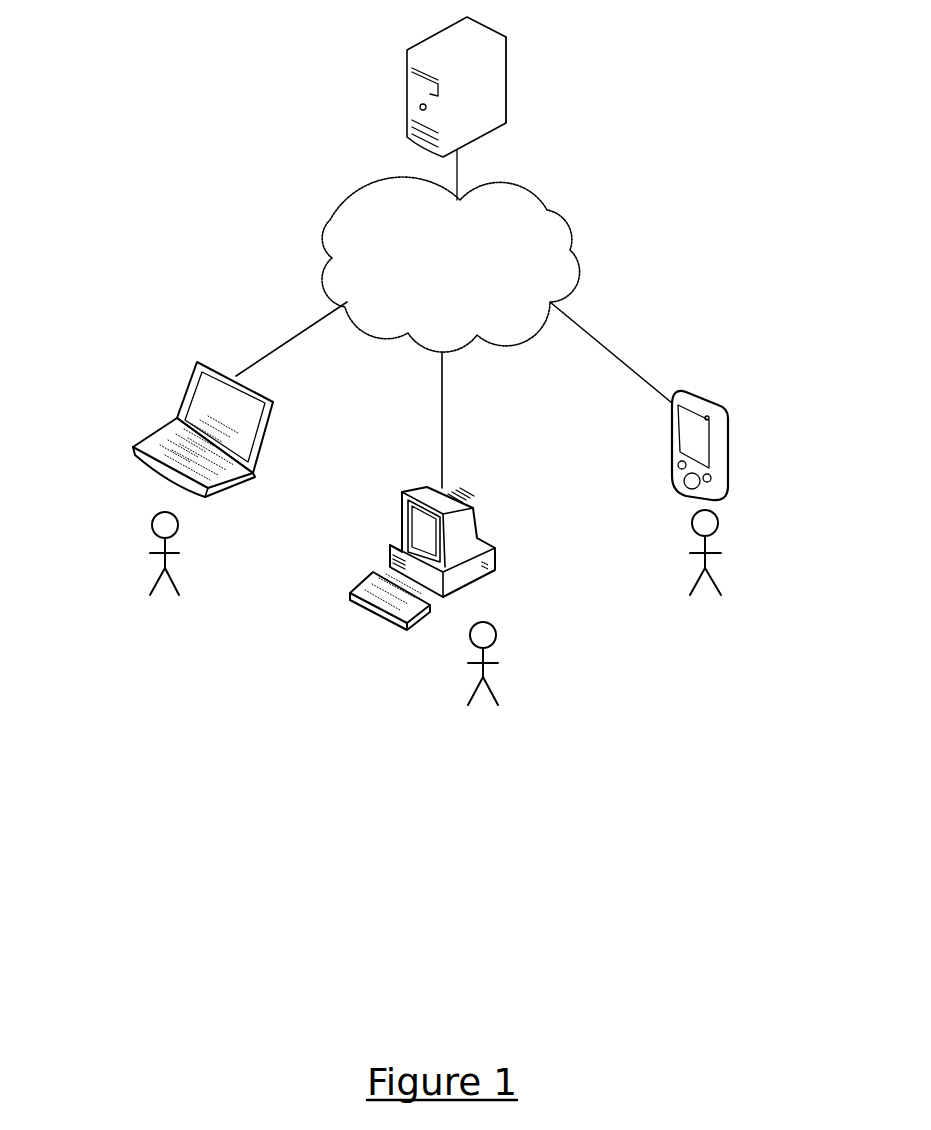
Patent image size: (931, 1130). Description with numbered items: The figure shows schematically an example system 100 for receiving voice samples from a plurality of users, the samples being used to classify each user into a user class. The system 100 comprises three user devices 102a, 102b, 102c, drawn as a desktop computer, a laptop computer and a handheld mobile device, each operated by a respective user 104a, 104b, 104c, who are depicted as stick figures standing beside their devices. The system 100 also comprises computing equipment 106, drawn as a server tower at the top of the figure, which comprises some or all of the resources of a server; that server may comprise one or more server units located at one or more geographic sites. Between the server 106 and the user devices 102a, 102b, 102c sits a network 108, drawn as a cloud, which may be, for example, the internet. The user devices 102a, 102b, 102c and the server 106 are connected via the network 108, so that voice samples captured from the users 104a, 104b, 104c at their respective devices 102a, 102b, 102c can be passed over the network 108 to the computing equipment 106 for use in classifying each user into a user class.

The system 100 is at (226, 95).
The user device 102a is at (454, 490).
The user device 102b is at (275, 402).
The user device 102c is at (672, 444).
The user 104a is at (496, 633).
The user 104b is at (152, 525).
The user 104c is at (719, 523).
The computing equipment 106 is at (407, 85).
The network 108 is at (322, 278).